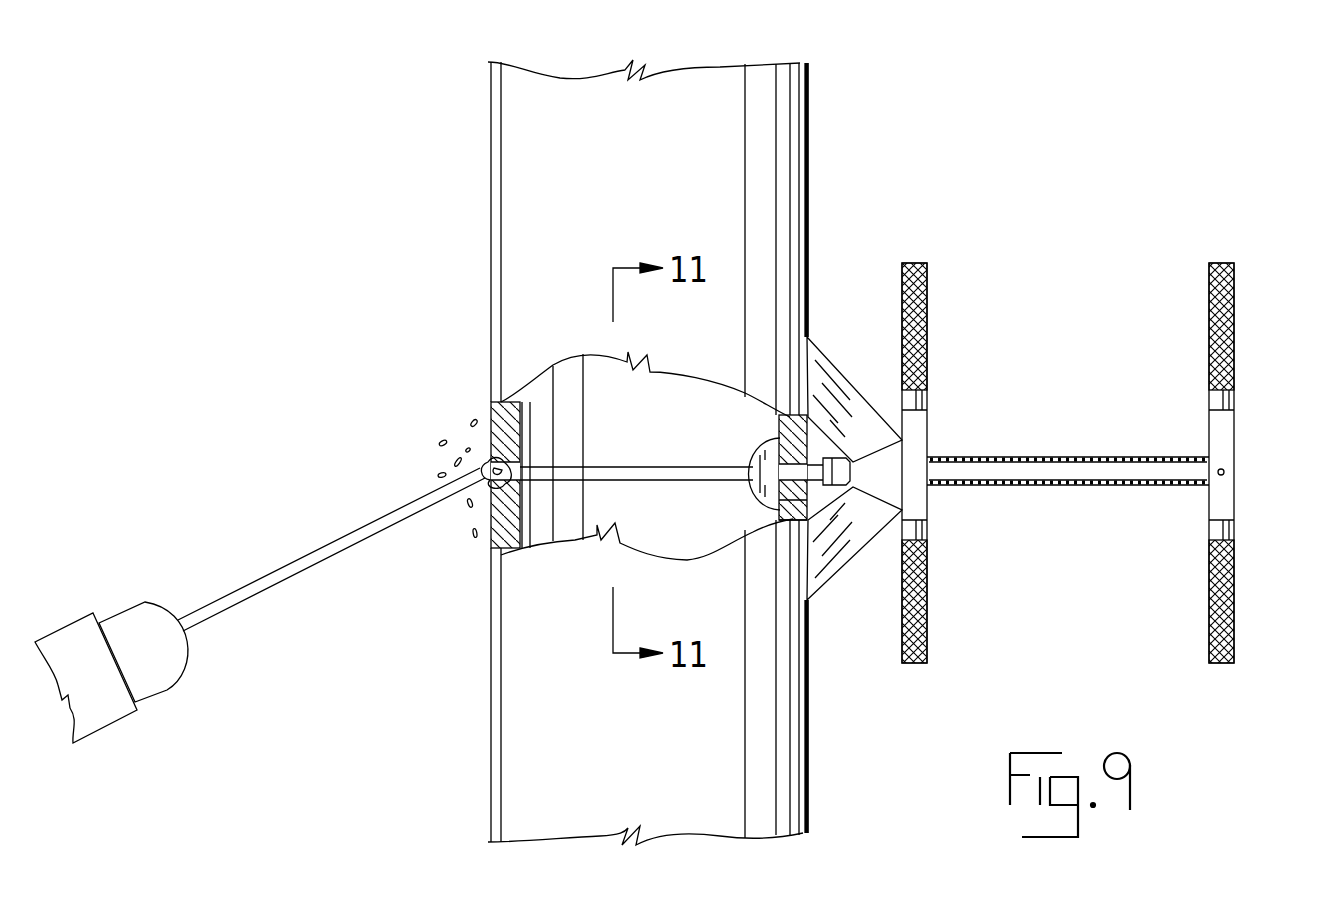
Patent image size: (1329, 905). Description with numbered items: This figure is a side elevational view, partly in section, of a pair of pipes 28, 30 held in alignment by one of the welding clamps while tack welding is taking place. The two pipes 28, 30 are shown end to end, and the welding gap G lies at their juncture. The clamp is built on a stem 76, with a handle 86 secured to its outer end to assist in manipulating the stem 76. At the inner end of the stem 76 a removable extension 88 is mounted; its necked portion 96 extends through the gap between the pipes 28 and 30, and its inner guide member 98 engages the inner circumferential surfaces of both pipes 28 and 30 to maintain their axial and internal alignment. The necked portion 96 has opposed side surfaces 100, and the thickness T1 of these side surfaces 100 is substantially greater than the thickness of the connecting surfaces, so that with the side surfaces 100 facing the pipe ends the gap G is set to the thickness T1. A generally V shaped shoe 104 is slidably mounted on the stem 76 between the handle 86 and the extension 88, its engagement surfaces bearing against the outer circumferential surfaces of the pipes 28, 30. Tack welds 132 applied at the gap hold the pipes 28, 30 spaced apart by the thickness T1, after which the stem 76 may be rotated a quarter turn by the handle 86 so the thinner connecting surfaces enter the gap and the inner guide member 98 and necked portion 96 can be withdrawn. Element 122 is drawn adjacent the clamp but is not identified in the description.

The pipe 28 is at (700, 93).
The pipe 30 is at (713, 820).
The stem 76 is at (1088, 450).
The handle 86 is at (1236, 410).
The removable extension 88 is at (858, 484).
The necked portion 96 is at (790, 420).
The inner guide member 98 is at (783, 440).
The side surfaces 100 is at (790, 520).
The V shaped shoe 104 is at (840, 544).
The inner plate 122 is at (928, 360).
The tack welds 132 is at (486, 458).
The welding gap G is at (687, 477).
The thickness of the side surfaces T1 is at (818, 443).